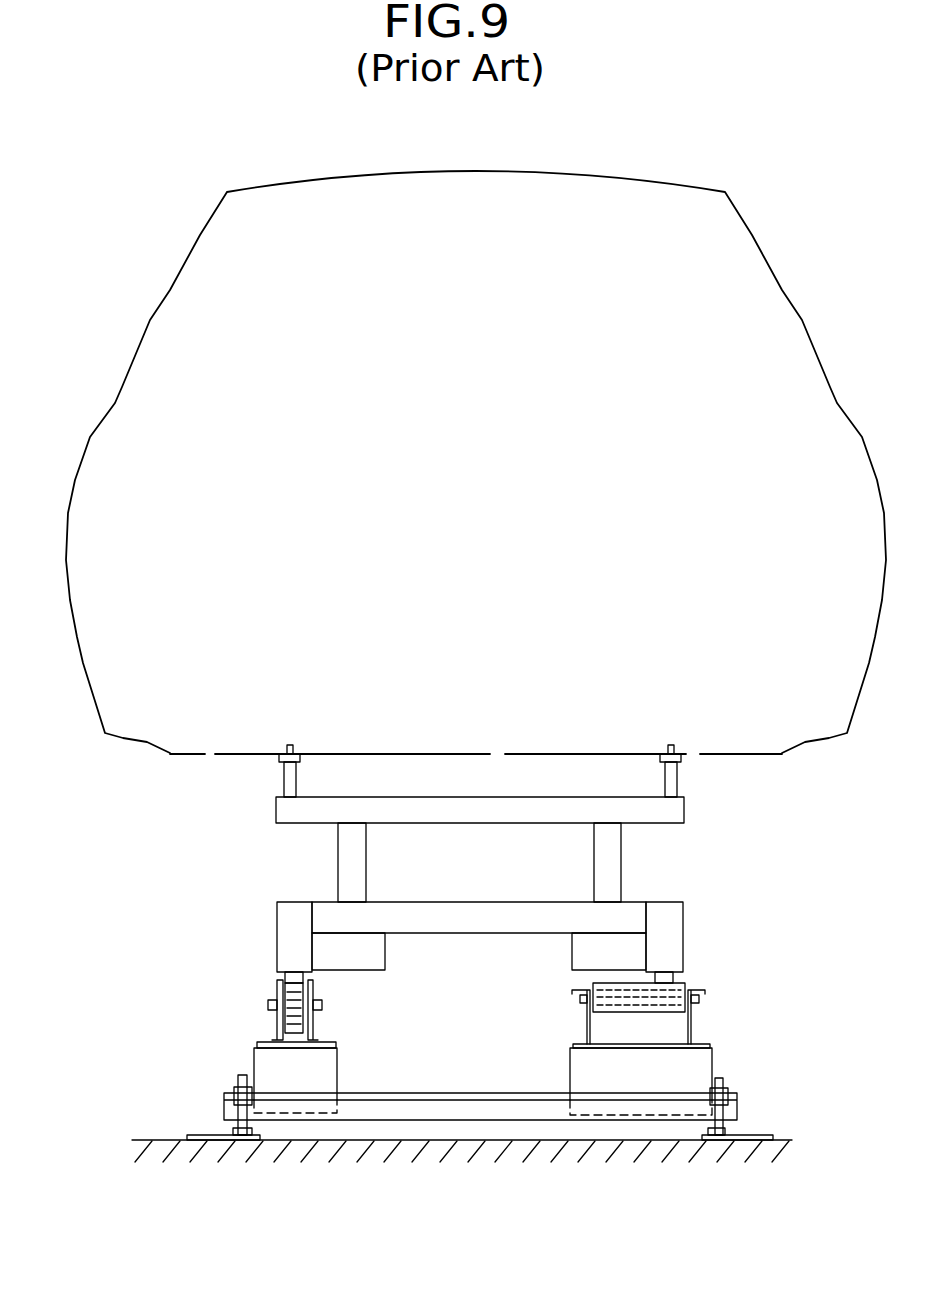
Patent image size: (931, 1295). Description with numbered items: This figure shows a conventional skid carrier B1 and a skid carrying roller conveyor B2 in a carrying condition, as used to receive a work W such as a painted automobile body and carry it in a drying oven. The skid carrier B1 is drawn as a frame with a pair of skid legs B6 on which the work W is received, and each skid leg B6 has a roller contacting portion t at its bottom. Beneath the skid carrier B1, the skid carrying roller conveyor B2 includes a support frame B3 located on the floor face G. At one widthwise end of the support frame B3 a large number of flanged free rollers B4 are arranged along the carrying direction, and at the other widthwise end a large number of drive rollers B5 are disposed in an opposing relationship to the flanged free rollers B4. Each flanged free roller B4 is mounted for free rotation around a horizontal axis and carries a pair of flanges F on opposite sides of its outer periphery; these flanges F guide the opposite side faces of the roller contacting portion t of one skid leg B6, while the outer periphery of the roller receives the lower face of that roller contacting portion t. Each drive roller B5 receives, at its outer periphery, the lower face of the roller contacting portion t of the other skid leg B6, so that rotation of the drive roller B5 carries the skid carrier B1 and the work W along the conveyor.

The work W is at (447, 172).
The skid carrier B1 is at (668, 895).
The skid carrying roller conveyor B2 is at (738, 1067).
The support frame B3 is at (375, 1107).
The flanged free rollers B4 is at (290, 1010).
The drive rollers B5 is at (620, 1003).
The skid legs B6 is at (285, 915).
The flanges F is at (283, 982).
The roller contacting portion t is at (297, 977).
The floor face G is at (790, 1140).